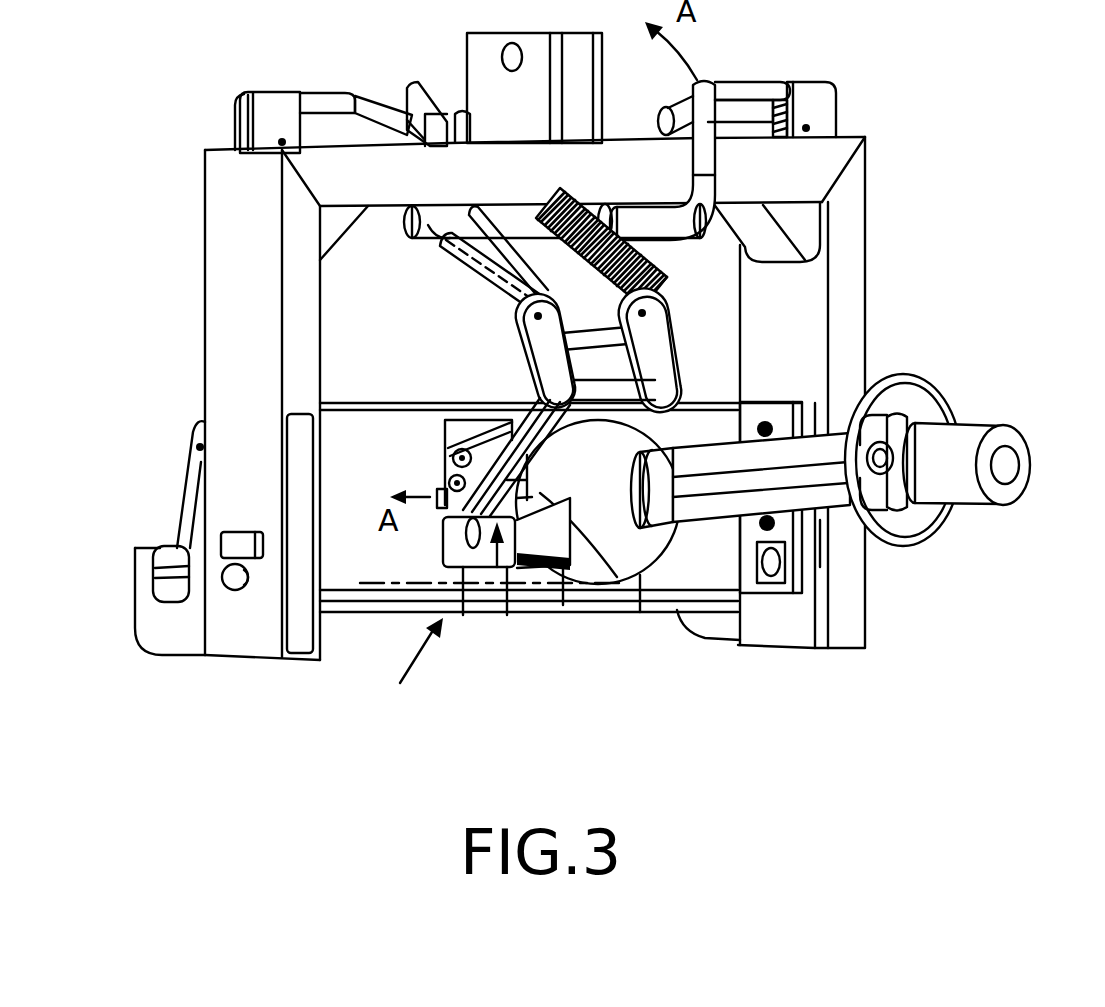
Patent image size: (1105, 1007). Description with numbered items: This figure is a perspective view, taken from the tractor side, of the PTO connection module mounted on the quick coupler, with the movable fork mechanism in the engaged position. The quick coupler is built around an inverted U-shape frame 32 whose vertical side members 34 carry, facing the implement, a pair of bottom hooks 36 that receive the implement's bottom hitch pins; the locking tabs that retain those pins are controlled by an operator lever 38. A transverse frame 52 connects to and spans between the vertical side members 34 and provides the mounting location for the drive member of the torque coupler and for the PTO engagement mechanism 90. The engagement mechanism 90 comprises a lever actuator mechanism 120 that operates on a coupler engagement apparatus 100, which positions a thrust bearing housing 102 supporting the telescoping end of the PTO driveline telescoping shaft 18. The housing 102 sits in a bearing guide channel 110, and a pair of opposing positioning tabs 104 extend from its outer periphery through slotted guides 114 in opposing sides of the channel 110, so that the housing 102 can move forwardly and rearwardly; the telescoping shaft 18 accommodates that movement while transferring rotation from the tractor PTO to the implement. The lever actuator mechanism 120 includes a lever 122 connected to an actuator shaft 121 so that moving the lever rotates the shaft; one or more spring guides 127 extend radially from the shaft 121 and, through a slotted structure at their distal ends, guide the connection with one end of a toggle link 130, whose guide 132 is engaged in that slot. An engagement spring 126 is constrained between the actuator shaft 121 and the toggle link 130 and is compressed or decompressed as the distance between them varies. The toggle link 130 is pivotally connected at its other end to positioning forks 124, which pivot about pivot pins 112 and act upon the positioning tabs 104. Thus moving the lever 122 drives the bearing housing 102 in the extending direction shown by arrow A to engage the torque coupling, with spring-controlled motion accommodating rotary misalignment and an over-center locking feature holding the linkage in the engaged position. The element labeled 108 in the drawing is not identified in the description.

The telescoping shaft 18 is at (967, 440).
The inverted U-shape frame 32 is at (823, 162).
The vertical side members 34 is at (858, 314).
The bottom hooks 36 is at (153, 602).
The lever 38 is at (765, 82).
The transverse frame 52 is at (360, 617).
The PTO engagement mechanism 90 is at (517, 415).
The coupler engagement apparatus 100 is at (434, 662).
The thrust bearing housing 102 is at (530, 505).
The positioning tabs 104 is at (440, 508).
The bearing collar 108 is at (598, 512).
The bearing guide channel 110 is at (463, 605).
The pivot pins 112 is at (440, 457).
The slotted guides 114 is at (513, 593).
The lever actuator mechanism 120 is at (688, 277).
The actuator shaft 121 is at (428, 237).
The lever 122 is at (790, 120).
The positioning forks 124 is at (443, 433).
The engagement spring 126 is at (480, 287).
The spring guide 127 is at (505, 222).
The toggle link 130 is at (528, 368).
The guide 132 is at (538, 344).